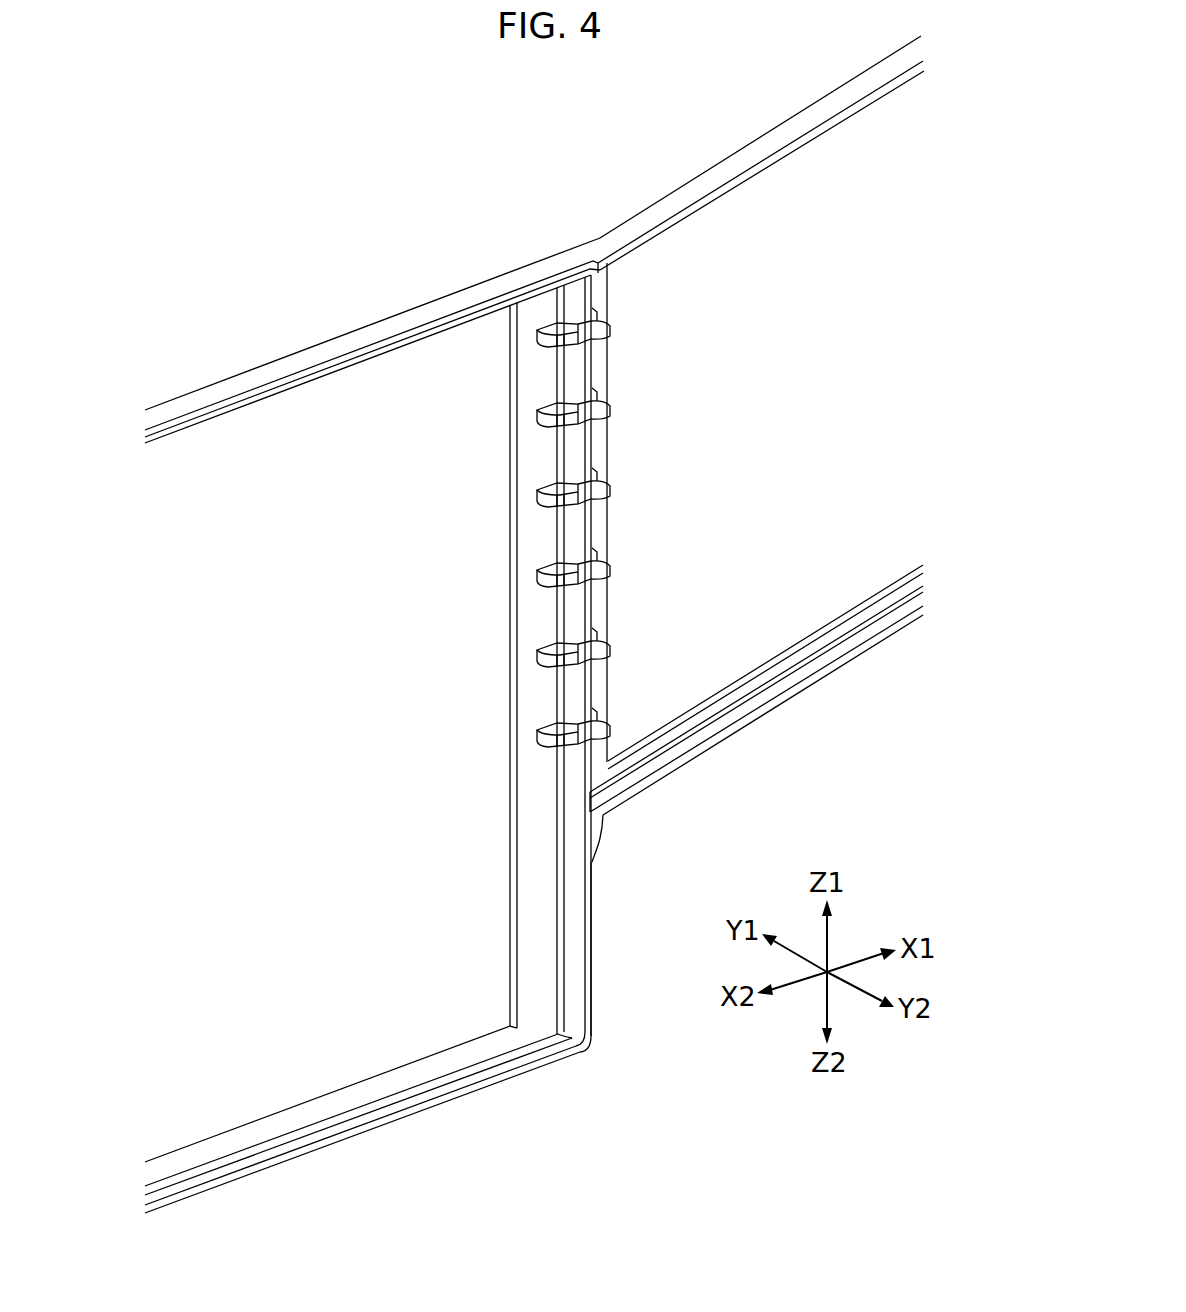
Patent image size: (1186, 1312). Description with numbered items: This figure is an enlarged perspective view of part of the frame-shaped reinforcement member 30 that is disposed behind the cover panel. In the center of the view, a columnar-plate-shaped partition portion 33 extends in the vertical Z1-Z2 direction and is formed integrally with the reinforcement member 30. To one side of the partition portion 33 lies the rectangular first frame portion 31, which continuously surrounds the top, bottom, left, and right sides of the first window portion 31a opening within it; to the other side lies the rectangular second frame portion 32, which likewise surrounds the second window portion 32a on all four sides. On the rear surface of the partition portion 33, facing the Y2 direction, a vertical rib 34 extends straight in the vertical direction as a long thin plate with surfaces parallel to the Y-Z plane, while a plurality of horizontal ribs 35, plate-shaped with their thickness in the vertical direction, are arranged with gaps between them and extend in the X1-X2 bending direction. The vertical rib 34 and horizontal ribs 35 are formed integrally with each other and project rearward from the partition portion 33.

The reinforcement member 30 is at (399, 292).
The first frame portion 31 is at (695, 185).
The first window portion 31a is at (790, 650).
The second frame portion 32 is at (260, 372).
The second window portion 32a is at (385, 1070).
The partition portion 33 is at (525, 550).
The vertical rib 34 is at (598, 446).
The horizontal ribs 35 is at (603, 403).